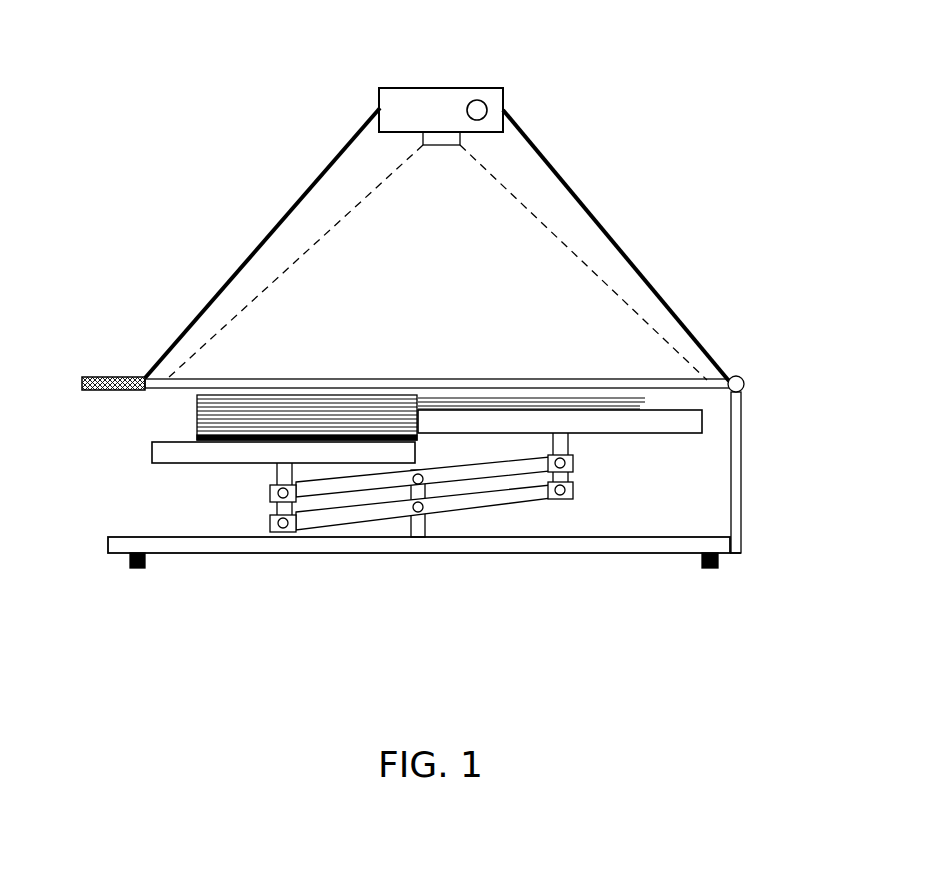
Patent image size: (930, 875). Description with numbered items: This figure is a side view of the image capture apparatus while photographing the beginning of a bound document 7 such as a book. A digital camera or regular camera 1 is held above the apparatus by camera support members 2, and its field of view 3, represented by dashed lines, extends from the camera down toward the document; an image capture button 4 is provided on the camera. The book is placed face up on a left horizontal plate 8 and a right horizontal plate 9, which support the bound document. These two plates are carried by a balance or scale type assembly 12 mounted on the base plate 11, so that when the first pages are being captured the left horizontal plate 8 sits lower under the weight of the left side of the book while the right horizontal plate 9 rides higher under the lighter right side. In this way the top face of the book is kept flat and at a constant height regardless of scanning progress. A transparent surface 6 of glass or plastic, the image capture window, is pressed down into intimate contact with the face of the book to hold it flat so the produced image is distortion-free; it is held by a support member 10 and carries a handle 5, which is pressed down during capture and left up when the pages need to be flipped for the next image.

The digital camera 1 is at (402, 78).
The camera support member 2 is at (330, 143).
The field of view 3 is at (332, 212).
The image capture button 4 is at (492, 100).
The handle 5 is at (105, 366).
The transparent surface 6 is at (327, 363).
The bound document 7 is at (583, 392).
The left horizontal plate 8 is at (698, 403).
The right horizontal plate 9 is at (140, 445).
The support member for transparent surface 10 is at (745, 422).
The base plate 11 is at (540, 563).
The balance/scale type assembly 12 is at (250, 503).